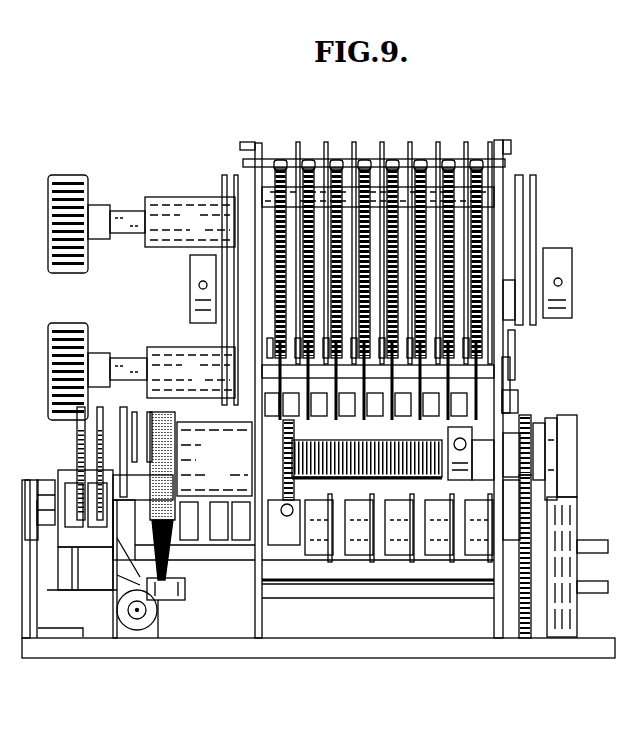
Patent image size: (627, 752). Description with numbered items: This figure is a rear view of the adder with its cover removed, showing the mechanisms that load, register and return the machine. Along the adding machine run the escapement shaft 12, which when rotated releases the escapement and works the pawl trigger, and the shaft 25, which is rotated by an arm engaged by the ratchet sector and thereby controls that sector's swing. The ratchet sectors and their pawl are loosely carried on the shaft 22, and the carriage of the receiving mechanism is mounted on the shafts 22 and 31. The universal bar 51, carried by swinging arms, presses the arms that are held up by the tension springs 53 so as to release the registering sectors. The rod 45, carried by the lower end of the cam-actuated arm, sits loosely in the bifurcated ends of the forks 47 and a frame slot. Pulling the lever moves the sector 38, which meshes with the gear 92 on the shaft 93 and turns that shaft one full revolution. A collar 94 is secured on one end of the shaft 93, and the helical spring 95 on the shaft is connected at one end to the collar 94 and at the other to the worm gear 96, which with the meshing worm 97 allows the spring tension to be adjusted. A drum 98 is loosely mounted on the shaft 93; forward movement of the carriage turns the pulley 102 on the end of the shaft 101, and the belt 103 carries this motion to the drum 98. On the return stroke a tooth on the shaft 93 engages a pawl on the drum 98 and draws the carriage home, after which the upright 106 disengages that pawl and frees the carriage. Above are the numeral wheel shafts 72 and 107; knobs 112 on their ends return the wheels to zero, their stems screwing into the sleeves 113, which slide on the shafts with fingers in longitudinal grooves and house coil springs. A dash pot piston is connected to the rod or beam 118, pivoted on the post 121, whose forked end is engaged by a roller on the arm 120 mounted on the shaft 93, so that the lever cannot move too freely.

The escapement shaft 12 is at (597, 593).
The shaft 22 is at (48, 497).
The shaft 25 is at (590, 542).
The shaft 31 is at (77, 569).
The sector 38 is at (520, 634).
The rod 45 is at (493, 397).
The forks 47 is at (117, 371).
The universal bar 51 is at (495, 140).
The tension springs 53 is at (378, 162).
The numeral wheel shaft 72 is at (127, 212).
The gear 92 is at (531, 418).
The shaft 93 is at (481, 472).
The collar 94 is at (452, 480).
The helical spring 95 is at (405, 477).
The worm gear 96 is at (293, 482).
The worm 97 is at (284, 523).
The drum 98 is at (214, 459).
The shaft 101 is at (133, 613).
The pulley 102 is at (147, 623).
The belt 103 is at (175, 538).
The upright 106 is at (128, 587).
The shaft 107 is at (118, 362).
The knobs 112 is at (80, 273).
The sleeves 113 is at (182, 235).
The rod or beam 118 is at (562, 445).
The arm 120 is at (548, 468).
The post 121 is at (572, 571).